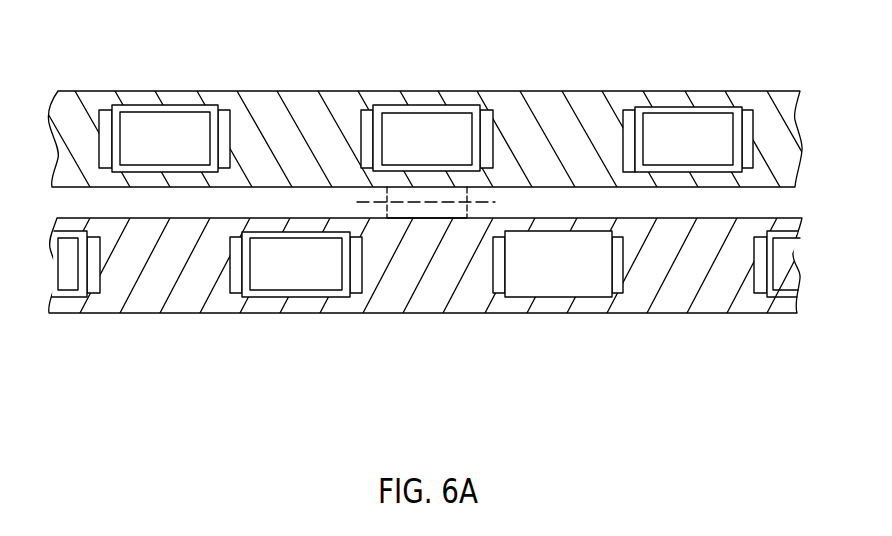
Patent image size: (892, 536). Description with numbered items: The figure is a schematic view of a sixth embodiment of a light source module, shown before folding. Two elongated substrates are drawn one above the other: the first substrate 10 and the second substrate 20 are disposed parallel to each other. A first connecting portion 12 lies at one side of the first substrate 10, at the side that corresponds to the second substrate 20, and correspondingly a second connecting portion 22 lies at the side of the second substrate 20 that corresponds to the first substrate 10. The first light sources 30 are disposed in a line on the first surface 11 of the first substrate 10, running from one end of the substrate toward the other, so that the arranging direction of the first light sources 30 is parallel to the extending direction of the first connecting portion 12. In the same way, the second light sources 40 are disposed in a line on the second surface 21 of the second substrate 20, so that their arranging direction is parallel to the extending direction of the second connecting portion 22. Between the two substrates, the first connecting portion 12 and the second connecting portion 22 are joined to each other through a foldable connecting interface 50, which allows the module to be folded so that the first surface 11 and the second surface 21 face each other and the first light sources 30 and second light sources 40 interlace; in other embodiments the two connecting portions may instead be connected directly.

The first substrate 10 is at (428, 99).
The first surface 11 is at (545, 108).
The first connecting portion 12 is at (423, 188).
The second substrate 20 is at (428, 293).
The second surface 21 is at (697, 297).
The second connecting portion 22 is at (428, 217).
The first light sources 30 is at (421, 132).
The second light sources 40 is at (293, 278).
The foldable connecting interface 50 is at (417, 208).